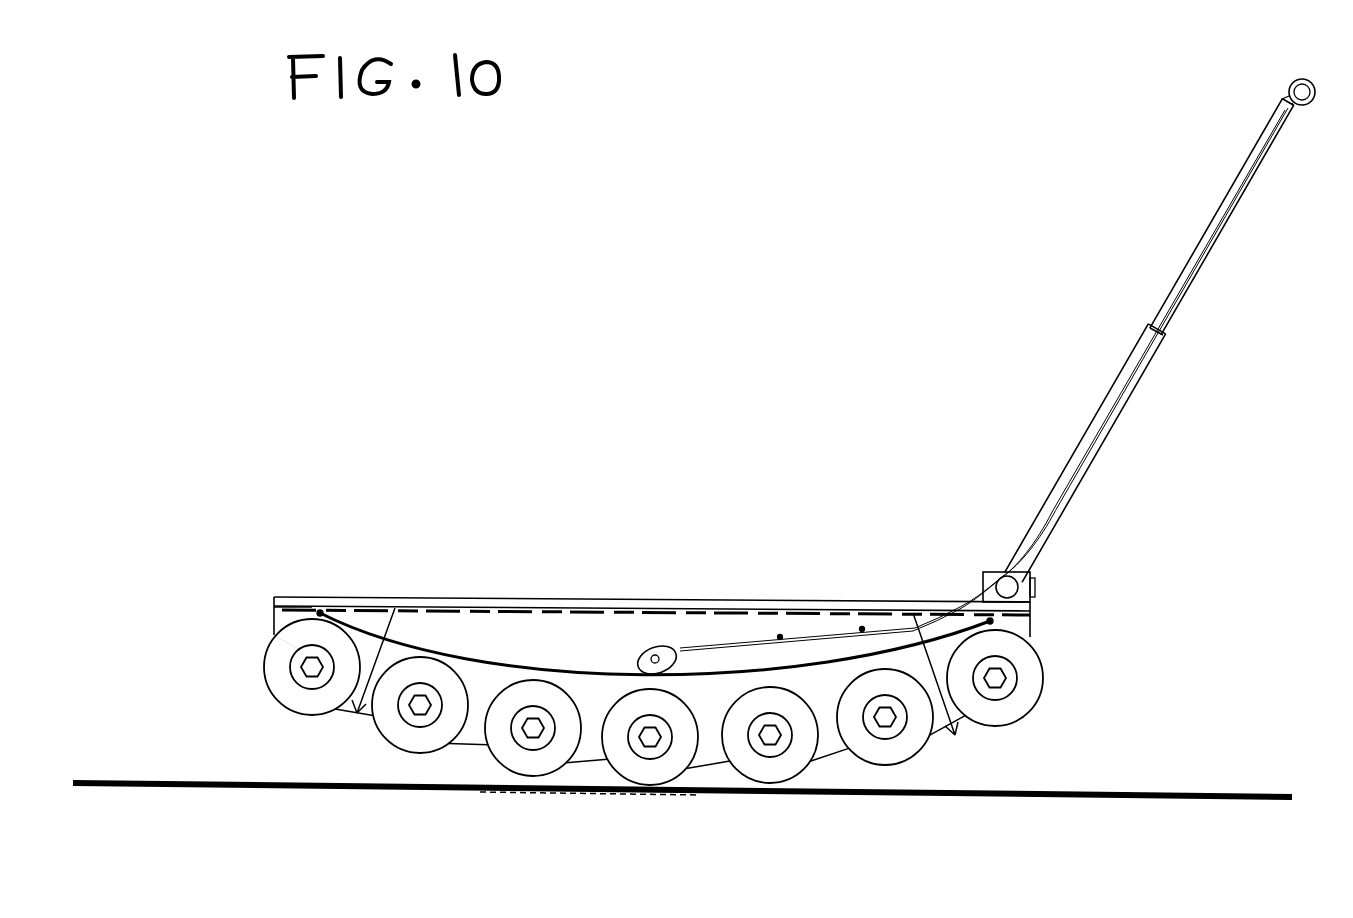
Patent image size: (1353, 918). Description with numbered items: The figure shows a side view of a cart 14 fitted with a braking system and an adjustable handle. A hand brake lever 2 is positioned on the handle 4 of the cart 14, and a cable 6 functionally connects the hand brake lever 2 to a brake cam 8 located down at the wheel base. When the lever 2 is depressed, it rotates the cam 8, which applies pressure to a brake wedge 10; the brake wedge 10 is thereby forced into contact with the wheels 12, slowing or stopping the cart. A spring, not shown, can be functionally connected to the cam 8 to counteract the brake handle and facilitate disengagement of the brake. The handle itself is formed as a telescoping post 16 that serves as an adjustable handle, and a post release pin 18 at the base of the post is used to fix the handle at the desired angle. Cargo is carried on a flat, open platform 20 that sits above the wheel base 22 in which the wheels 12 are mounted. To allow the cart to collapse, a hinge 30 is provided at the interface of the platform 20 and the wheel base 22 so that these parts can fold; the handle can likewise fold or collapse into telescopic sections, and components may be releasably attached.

The hand brake lever 2 is at (1273, 90).
The handle 4 is at (1308, 94).
The cable 6 is at (1058, 503).
The brake cam 8 is at (645, 652).
The brake wedge 10 is at (407, 628).
The wheels 12 is at (298, 697).
The cart 14 is at (900, 483).
The telescoping post 16 is at (1170, 308).
The post release pin 18 is at (1037, 578).
The platform 20 is at (313, 600).
The wheel base 22 is at (1020, 632).
The hinge 30 is at (837, 605).